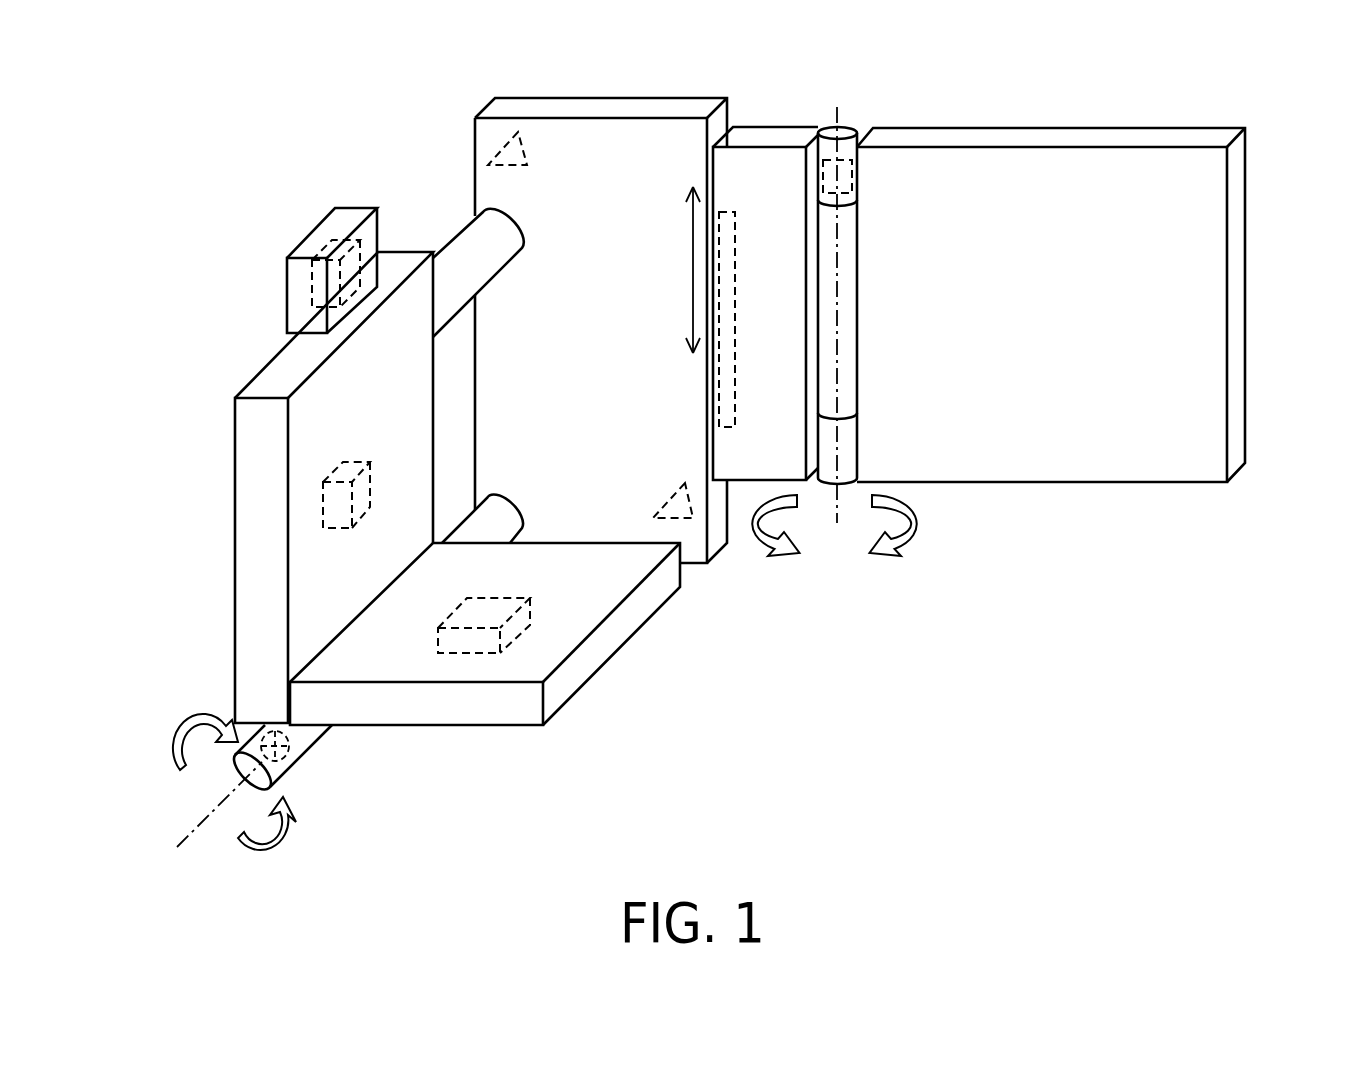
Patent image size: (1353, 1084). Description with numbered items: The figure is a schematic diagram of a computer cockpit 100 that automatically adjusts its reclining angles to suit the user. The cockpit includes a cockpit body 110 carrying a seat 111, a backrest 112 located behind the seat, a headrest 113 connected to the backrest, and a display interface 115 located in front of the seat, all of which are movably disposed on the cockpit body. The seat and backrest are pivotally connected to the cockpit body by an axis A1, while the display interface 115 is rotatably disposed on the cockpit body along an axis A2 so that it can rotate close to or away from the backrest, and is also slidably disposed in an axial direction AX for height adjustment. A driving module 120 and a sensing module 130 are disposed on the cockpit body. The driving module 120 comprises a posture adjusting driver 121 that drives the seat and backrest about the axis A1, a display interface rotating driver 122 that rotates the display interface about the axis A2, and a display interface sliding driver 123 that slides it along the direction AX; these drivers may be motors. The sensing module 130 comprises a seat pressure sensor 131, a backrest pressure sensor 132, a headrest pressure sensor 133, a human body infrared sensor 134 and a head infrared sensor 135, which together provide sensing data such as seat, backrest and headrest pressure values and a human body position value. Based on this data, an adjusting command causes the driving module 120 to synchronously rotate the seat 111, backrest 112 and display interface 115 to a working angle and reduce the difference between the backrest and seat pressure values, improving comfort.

The computer cockpit 100 is at (314, 129).
The cockpit body 110 is at (700, 426).
The seat 111 is at (607, 637).
The backrest 112 is at (250, 566).
The headrest 113 is at (332, 225).
The display interface 115 is at (1210, 262).
The driving module 120 is at (602, 439).
The posture adjusting driver 121 is at (297, 762).
The display interface rotating driver 122 is at (858, 178).
The display interface sliding driver 123 is at (732, 212).
The sensing module 130 is at (460, 414).
The seat pressure sensor 131 is at (517, 635).
The backrest pressure sensor 132 is at (323, 505).
The headrest pressure sensor 133 is at (312, 294).
The human body infrared sensor 134 is at (682, 517).
The head infrared sensor 135 is at (507, 150).
The axial direction AX is at (688, 250).
The axis A1 is at (187, 832).
The axis A2 is at (837, 515).